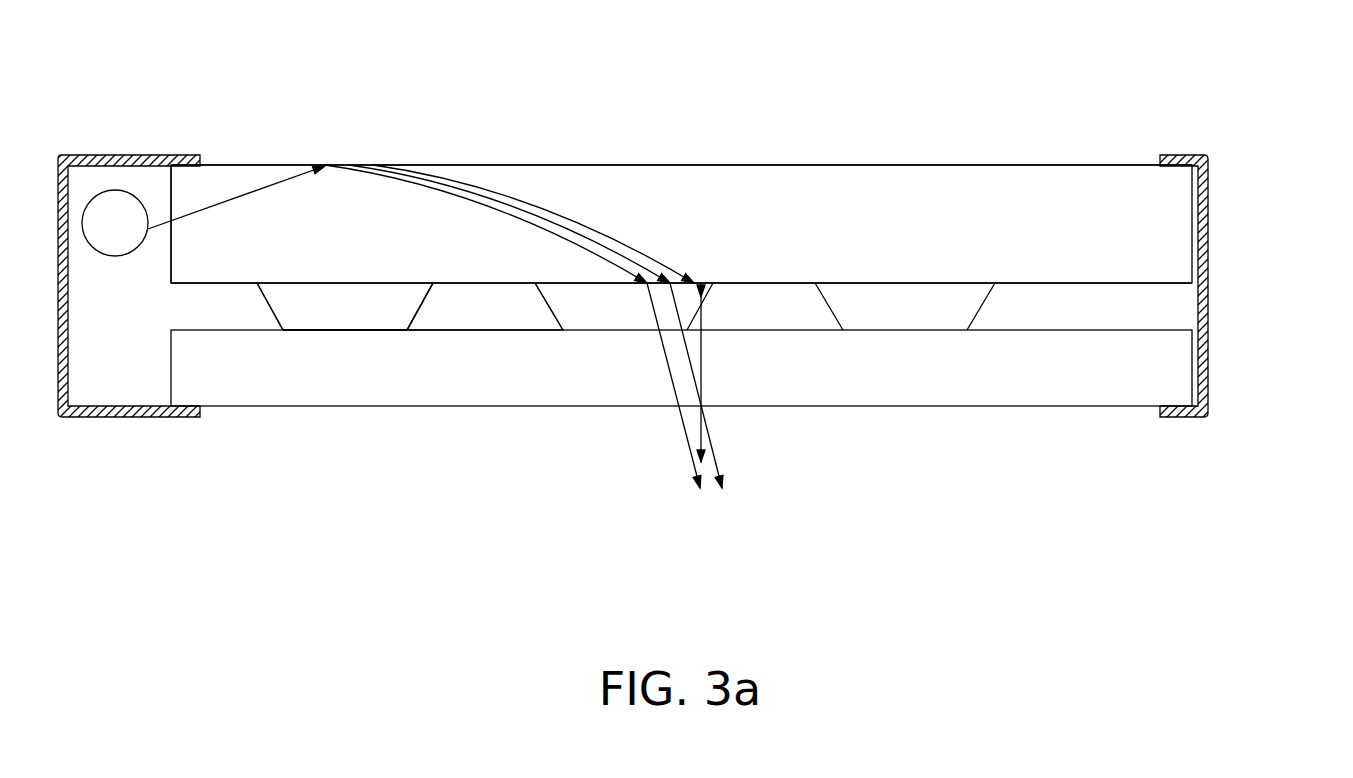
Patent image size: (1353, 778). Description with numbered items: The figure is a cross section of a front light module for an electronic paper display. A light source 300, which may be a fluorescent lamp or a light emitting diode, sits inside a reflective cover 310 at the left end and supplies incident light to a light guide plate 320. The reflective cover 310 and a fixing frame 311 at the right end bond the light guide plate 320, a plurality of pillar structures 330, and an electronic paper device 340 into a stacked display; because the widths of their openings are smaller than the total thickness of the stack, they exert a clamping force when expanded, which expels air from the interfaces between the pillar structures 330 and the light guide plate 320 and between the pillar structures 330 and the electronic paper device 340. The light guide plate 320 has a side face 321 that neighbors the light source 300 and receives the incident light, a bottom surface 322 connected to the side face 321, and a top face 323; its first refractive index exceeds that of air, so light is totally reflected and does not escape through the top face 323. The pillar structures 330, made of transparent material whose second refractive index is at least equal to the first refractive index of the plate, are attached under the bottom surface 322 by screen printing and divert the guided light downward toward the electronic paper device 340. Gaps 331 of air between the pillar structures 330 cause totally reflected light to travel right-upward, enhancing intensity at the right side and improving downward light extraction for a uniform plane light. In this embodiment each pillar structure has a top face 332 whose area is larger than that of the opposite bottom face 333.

The light source 300 is at (128, 212).
The reflective cover 310 is at (115, 155).
The fixing frame 311 is at (1210, 203).
The light guide plate 320 is at (1146, 207).
The side face 321 is at (172, 188).
The bottom surface 322 is at (212, 282).
The top face 323 is at (598, 165).
The pillar structures 330 is at (382, 320).
The gaps 331 is at (525, 320).
The top face 332 is at (335, 283).
The bottom face 333 is at (312, 330).
The electronic paper device 340 is at (1000, 375).